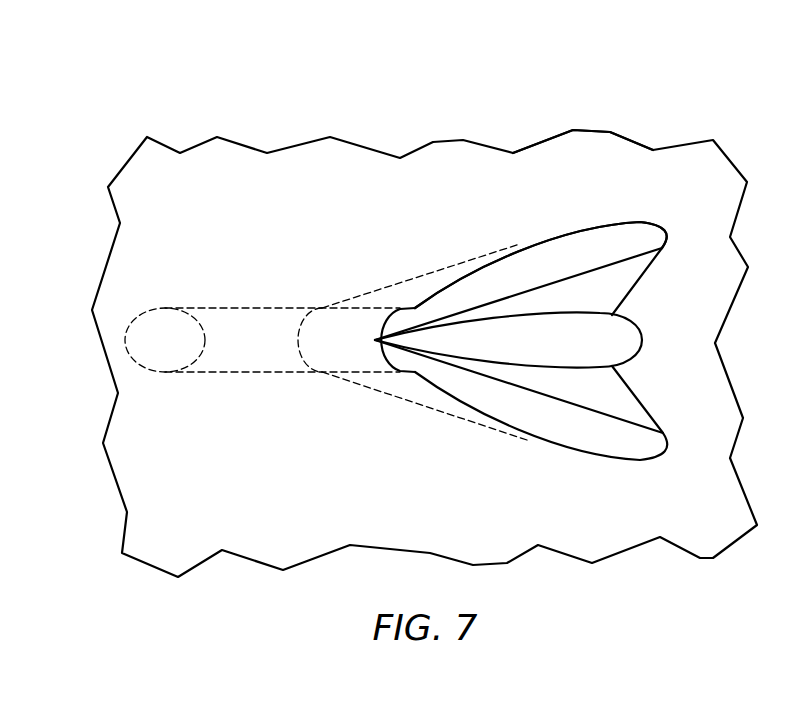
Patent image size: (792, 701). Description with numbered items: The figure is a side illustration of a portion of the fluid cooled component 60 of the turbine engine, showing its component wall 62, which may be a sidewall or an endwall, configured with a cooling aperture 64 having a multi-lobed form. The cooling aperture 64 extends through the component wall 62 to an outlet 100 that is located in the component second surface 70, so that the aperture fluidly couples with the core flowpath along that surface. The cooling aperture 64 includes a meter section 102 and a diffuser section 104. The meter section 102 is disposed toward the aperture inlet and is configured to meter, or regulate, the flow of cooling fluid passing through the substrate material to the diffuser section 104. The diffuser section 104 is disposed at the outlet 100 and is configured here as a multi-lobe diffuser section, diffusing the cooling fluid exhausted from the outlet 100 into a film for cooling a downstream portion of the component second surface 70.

The fluid cooled component 60 is at (424, 306).
The component wall 62 is at (596, 125).
The cooling aperture 64 is at (640, 232).
The component second surface 70 is at (672, 510).
The outlet 100 is at (542, 341).
The meter section 102 is at (240, 300).
The diffuser section 104 is at (460, 252).